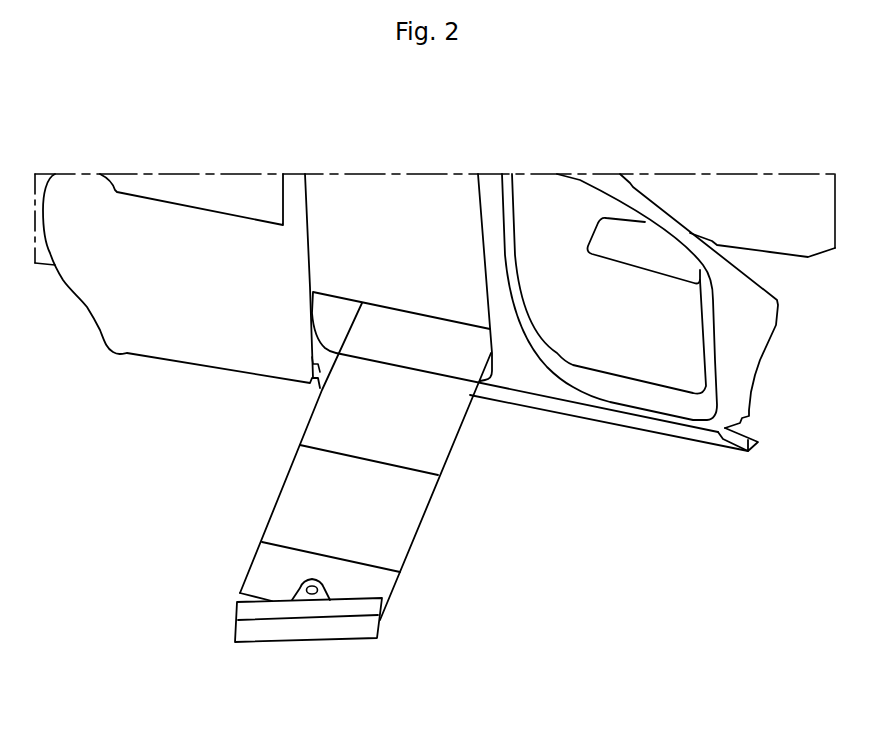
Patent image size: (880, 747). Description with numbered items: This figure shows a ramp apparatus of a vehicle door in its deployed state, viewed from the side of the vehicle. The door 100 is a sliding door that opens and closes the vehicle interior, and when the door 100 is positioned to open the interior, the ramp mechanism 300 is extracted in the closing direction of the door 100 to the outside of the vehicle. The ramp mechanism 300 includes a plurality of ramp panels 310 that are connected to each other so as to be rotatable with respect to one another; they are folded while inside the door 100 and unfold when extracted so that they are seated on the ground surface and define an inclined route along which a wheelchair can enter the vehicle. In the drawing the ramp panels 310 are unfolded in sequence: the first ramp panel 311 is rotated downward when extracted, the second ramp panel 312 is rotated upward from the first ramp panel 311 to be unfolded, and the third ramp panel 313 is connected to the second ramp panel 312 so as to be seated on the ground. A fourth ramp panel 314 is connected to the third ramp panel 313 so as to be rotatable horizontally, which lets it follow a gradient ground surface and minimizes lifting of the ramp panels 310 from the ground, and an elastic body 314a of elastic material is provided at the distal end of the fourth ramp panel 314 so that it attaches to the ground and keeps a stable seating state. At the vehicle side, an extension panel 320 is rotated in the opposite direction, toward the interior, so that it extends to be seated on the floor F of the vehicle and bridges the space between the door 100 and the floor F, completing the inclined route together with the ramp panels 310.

The door 100 is at (152, 330).
The floor F is at (387, 258).
The ramp mechanism 300 is at (250, 505).
The ramp panels 310 is at (575, 473).
The first ramp panel 311 is at (427, 435).
The second ramp panel 312 is at (402, 508).
The third ramp panel 313 is at (382, 583).
The fourth ramp panel 314 is at (370, 608).
The elastic body 314a is at (295, 630).
The extension panel 320 is at (433, 337).